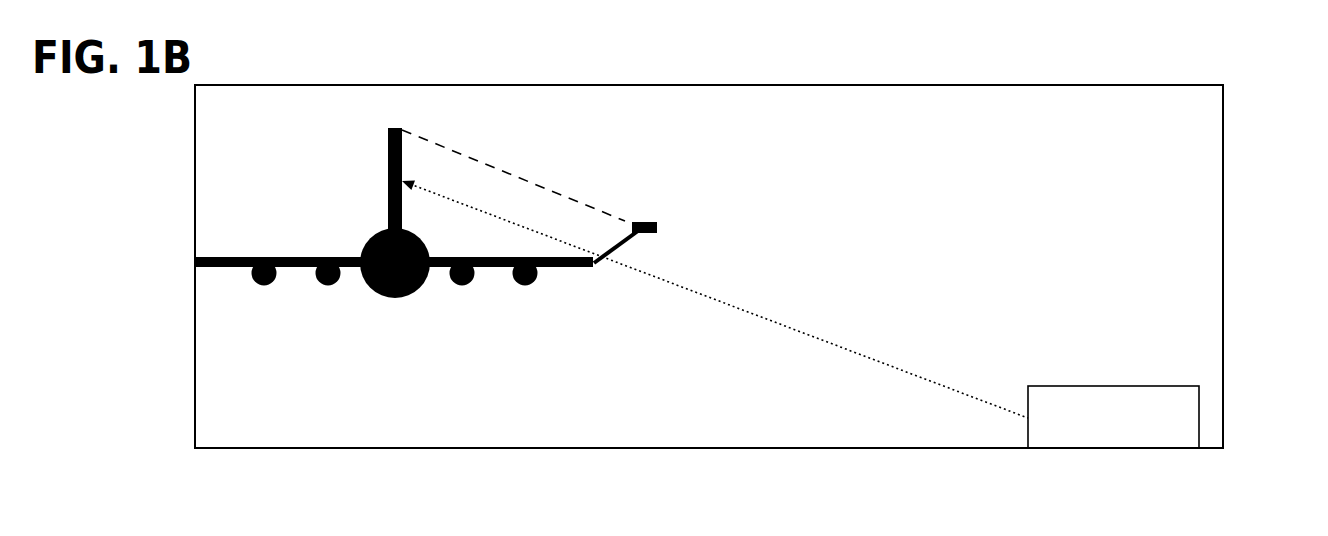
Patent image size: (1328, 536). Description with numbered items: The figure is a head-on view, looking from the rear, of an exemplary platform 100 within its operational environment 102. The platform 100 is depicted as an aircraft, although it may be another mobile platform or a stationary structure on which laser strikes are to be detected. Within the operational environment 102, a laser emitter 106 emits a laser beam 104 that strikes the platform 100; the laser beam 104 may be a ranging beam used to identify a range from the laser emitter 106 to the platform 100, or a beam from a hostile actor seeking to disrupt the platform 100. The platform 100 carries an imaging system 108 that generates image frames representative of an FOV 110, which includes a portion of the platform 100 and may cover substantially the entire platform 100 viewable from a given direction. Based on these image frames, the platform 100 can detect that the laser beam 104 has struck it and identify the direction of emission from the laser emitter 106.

The platform 100 is at (255, 258).
The operational environment 102 is at (1223, 146).
The laser beam 104 is at (768, 320).
The laser emitter 106 is at (1115, 386).
The imaging system 108 is at (647, 221).
The FOV 110 is at (500, 170).